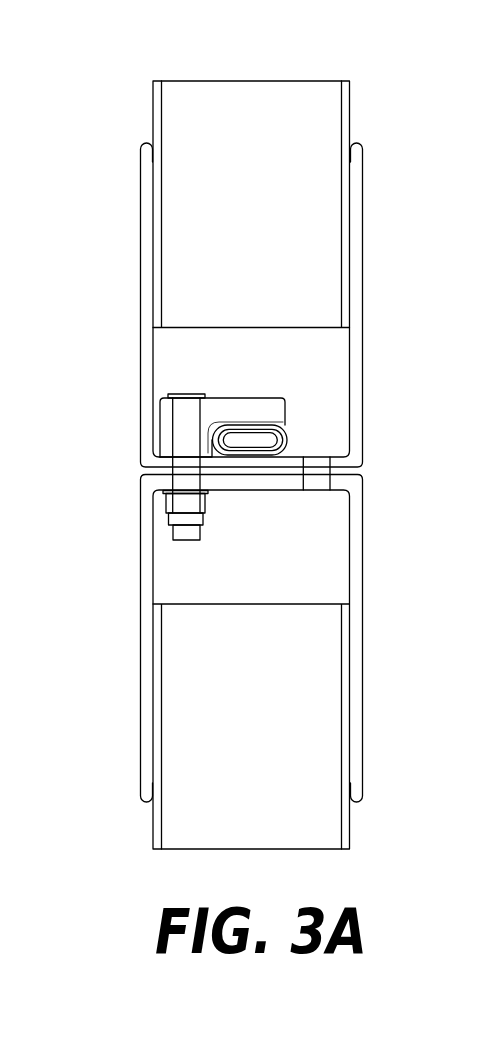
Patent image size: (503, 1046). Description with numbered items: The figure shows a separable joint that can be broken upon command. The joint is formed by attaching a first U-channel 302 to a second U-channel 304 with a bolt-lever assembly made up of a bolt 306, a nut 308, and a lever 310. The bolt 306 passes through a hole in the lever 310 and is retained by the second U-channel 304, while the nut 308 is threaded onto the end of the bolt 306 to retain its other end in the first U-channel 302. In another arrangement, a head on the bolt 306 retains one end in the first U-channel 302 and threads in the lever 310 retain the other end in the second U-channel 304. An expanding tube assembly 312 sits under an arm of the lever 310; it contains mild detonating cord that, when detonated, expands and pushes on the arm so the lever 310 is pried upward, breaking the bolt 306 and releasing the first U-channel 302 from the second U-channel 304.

The first U-channel 302 is at (363, 572).
The second U-channel 304 is at (363, 281).
The bolt 306 is at (185, 395).
The nut 308 is at (163, 504).
The lever 310 is at (163, 427).
The expanding tube assembly 312 is at (287, 442).